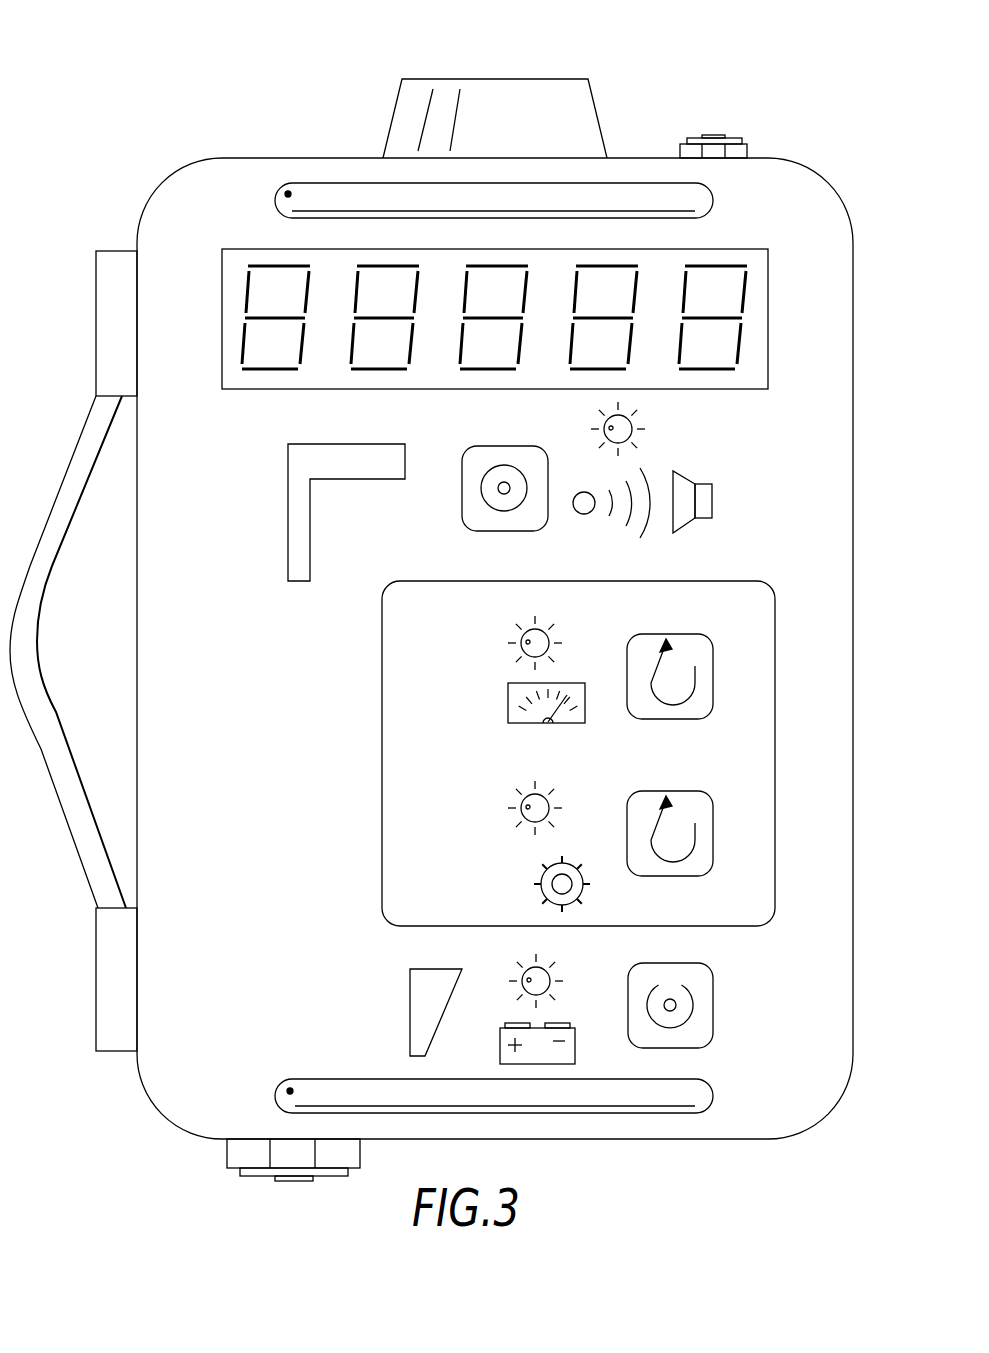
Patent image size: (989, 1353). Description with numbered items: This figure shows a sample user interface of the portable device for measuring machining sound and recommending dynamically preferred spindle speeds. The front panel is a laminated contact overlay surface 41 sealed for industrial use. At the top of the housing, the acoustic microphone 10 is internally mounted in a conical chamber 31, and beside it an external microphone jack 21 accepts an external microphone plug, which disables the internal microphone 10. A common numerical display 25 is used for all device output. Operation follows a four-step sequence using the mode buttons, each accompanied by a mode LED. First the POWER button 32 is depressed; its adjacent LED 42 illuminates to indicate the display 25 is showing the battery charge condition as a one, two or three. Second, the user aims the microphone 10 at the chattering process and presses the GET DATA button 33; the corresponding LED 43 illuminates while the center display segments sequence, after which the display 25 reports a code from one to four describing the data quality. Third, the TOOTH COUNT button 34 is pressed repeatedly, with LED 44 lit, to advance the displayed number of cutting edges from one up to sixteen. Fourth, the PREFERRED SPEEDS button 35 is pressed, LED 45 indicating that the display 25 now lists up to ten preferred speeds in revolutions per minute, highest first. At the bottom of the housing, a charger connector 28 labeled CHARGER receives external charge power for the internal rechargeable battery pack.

The acoustic microphone 10 is at (453, 627).
The external microphone jack 21 is at (712, 134).
The numerical display 25 is at (757, 322).
The charger jack 28 is at (287, 1180).
The conical chamber 31 is at (402, 126).
The POWER button 32 is at (713, 1002).
The GET DATA button 33 is at (513, 444).
The TOOTH COUNT button 34 is at (713, 828).
The PREFERRED SPEEDS button 35 is at (713, 672).
The laminated contact overlay surface 41 is at (835, 490).
The LED 42 is at (520, 975).
The LED 43 is at (633, 420).
The LED 44 is at (520, 810).
The LED 45 is at (520, 642).